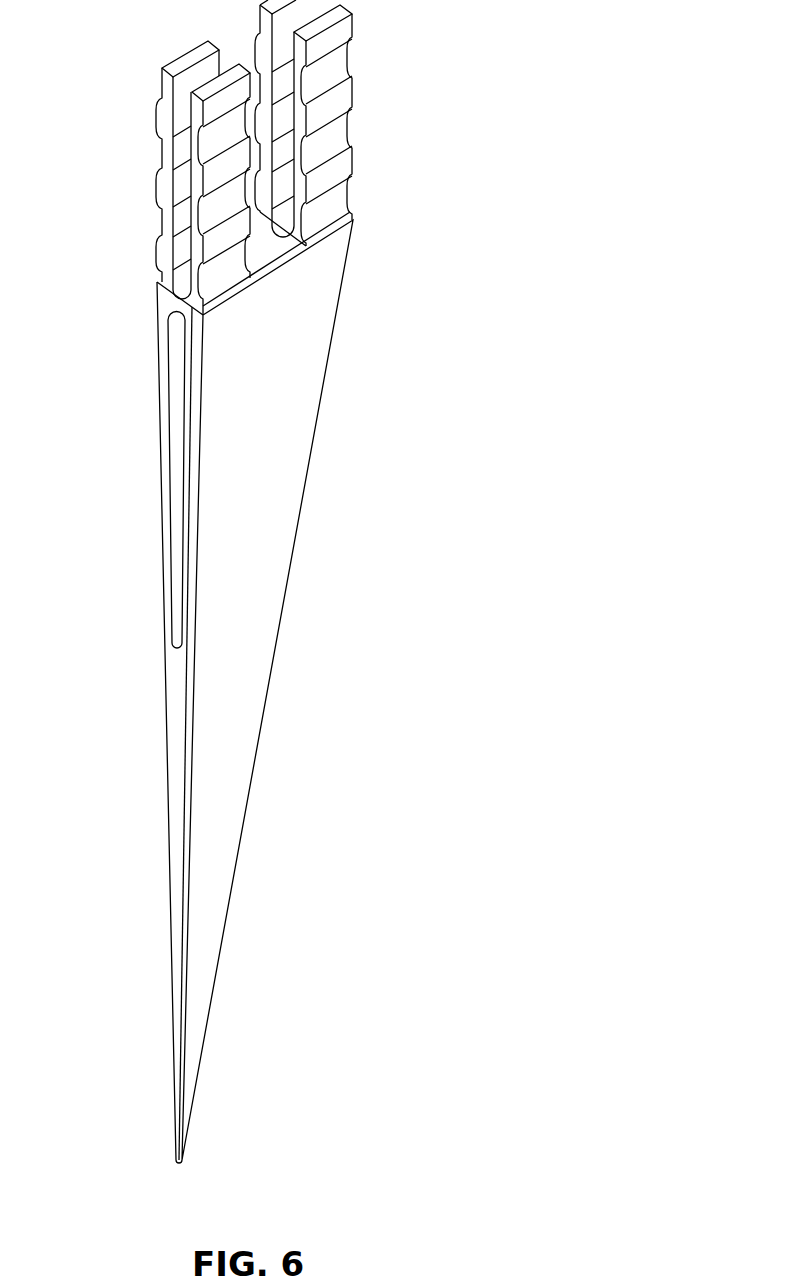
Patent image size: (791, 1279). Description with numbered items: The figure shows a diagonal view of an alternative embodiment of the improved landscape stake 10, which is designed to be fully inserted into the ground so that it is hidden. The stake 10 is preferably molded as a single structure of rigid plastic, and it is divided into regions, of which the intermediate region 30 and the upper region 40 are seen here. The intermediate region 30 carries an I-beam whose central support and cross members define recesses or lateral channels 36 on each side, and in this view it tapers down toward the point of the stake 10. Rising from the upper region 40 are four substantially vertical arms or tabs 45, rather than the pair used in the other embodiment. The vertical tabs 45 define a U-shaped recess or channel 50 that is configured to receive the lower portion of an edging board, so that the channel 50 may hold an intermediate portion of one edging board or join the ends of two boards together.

The stake 10 is at (261, 581).
The intermediate region 30 is at (315, 455).
The lateral channel 36 is at (172, 440).
The upper region 40 is at (345, 120).
The vertical tabs 45 is at (260, 157).
The channel 50 is at (184, 266).